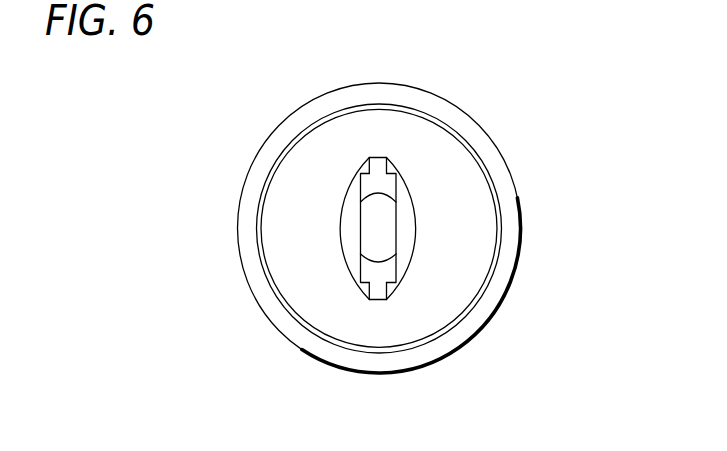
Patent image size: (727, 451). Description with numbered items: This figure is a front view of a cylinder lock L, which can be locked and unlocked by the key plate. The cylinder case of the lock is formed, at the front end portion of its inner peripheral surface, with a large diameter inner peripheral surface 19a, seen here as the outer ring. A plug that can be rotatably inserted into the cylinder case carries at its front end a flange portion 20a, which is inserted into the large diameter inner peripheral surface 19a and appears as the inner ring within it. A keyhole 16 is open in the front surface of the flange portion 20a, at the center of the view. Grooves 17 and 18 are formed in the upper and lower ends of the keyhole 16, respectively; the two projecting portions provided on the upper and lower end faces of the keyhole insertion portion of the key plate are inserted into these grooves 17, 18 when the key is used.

The cylinder lock L is at (522, 144).
The keyhole 16 is at (363, 215).
The groove 17 is at (373, 158).
The groove 18 is at (373, 300).
The large diameter inner peripheral surface 19a is at (522, 229).
The flange portion 20a is at (467, 280).